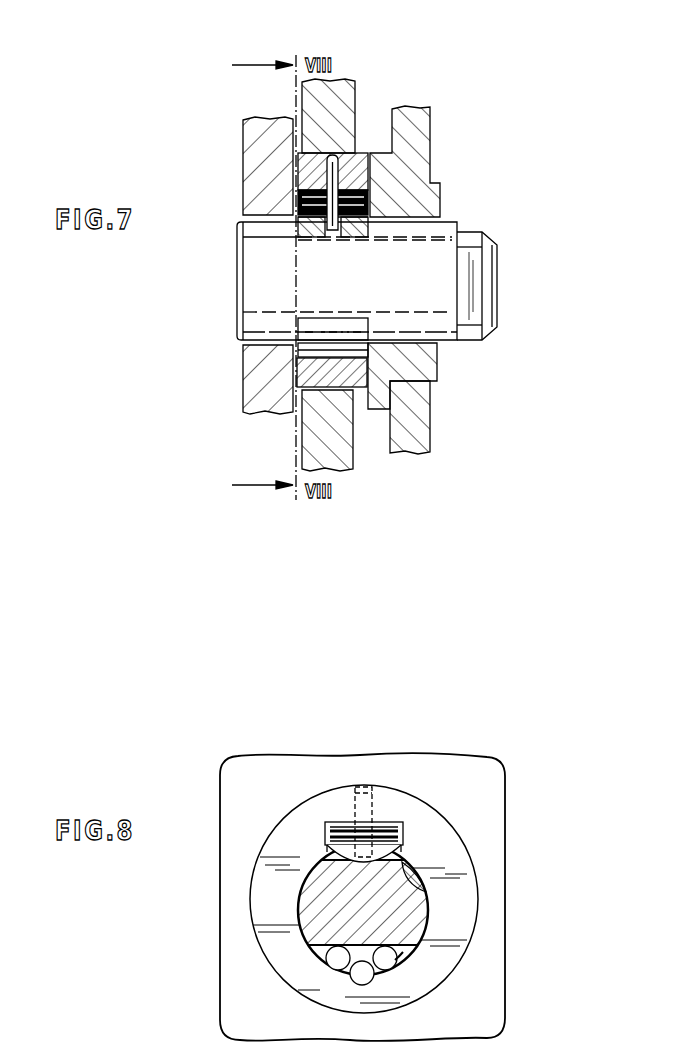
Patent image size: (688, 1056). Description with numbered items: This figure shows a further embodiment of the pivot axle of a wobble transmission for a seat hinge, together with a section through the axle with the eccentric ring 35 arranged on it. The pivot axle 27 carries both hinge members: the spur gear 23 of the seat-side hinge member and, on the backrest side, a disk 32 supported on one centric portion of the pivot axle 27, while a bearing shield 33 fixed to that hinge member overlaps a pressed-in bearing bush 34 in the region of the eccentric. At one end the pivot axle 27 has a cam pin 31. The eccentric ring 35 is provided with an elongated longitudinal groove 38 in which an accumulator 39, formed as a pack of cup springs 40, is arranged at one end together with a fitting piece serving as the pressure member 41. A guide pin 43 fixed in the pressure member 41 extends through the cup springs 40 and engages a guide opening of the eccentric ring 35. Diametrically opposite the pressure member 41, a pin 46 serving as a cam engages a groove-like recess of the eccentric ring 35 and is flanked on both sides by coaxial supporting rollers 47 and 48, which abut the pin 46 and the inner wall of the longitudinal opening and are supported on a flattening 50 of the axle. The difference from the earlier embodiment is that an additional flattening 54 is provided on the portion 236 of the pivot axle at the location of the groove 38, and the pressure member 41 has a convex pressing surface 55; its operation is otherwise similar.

In FIG. 7, the spur gear 23 is at (335, 112).
In FIG. 7, the pivot axle 27 is at (237, 252).
In FIG. 7, the cam pin 31 is at (467, 240).
In FIG. 7, the disk 32 is at (252, 143).
In FIG. 7, the bearing shield 33 is at (407, 425).
In FIG. 7, the bearing bush 34 is at (420, 365).
In FIG. 8, the eccentric ring 35 is at (390, 803).
In FIG. 8, the longitudinal groove 38 is at (403, 840).
In FIG. 8, the accumulator 39 is at (337, 823).
In FIG. 7, the cup springs 40 is at (298, 202).
In FIG. 7, the pressure member 41 is at (360, 226).
In FIG. 7, the guide pin 43 is at (337, 153).
In FIG. 8, the guide pin 43 is at (362, 790).
In FIG. 7, the pin 46 is at (338, 348).
In FIG. 8, the pin 46 is at (363, 975).
In FIG. 8, the supporting roller 47 is at (338, 957).
In FIG. 7, the supporting roller 48 is at (318, 335).
In FIG. 8, the supporting roller 48 is at (385, 960).
In FIG. 8, the flattening 50 is at (403, 952).
In FIG. 8, the flattening 54 is at (425, 890).
In FIG. 8, the convex pressing surface 55 is at (342, 856).
In FIG. 7, the portion of the pivot axle 236 is at (315, 286).
In FIG. 8, the portion of the pivot axle 236 is at (332, 905).